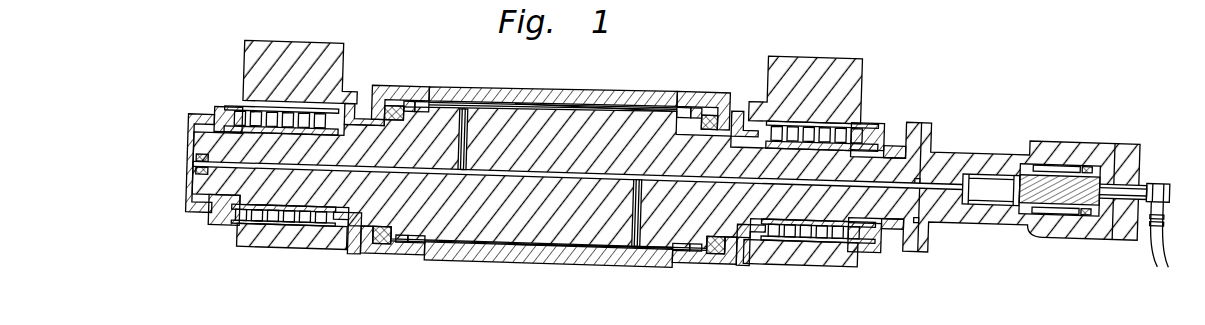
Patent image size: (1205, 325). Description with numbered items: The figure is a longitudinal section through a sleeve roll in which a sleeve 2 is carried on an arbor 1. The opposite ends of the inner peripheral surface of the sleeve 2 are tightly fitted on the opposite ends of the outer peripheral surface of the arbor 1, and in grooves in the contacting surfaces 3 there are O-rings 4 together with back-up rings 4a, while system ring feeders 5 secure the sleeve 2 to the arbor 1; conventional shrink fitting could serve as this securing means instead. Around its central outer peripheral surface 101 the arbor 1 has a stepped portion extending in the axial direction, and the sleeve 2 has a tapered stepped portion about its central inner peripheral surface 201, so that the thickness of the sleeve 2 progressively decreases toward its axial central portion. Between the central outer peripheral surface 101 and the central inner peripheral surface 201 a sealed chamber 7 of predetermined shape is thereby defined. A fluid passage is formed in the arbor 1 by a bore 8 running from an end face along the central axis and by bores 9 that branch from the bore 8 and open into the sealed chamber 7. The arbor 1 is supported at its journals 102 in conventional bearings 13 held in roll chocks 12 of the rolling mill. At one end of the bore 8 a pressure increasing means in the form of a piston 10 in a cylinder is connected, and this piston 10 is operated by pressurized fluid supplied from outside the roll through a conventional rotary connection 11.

The arbor 1 is at (599, 111).
The sleeve 2 is at (578, 80).
The contacting surfaces 3 is at (432, 95).
The O-rings 4 is at (410, 95).
The seal ring 4a is at (406, 100).
The system ring feeders 5 is at (372, 86).
The sealed chamber 7 is at (545, 97).
The bore 8 is at (463, 157).
The bores 9 is at (463, 130).
The piston 10 is at (1022, 151).
The rotary connection 11 is at (1160, 156).
The roll chocks 12 is at (242, 56).
The bearings 13 is at (250, 106).
The central outer peripheral surface 101 is at (513, 96).
The journals 102 is at (314, 200).
The central inner peripheral surface 201 is at (478, 98).